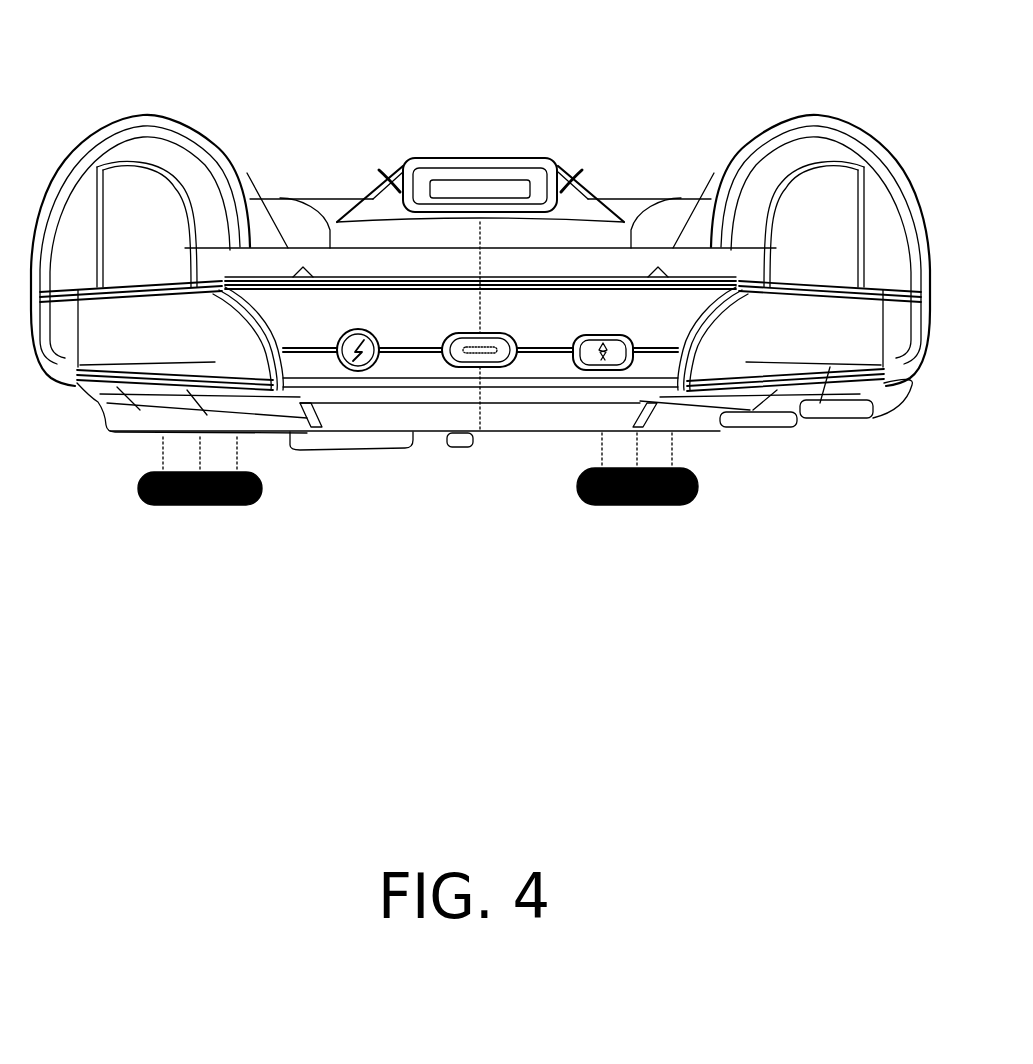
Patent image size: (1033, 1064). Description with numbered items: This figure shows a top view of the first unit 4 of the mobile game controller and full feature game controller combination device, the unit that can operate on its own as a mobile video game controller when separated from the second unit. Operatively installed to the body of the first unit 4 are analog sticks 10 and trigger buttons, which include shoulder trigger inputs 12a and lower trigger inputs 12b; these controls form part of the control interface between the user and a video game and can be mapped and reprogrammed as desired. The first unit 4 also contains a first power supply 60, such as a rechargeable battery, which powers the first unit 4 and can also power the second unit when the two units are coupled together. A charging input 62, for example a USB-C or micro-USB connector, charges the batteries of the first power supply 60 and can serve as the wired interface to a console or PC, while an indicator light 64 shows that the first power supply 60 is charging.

The first unit 4 is at (797, 487).
The analog stick 10 is at (195, 507).
The shoulder trigger inputs 12a is at (100, 335).
The lower trigger inputs 12b is at (153, 128).
The first power supply 60 is at (596, 198).
The charging input 62 is at (492, 370).
The indicator light 64 is at (357, 328).